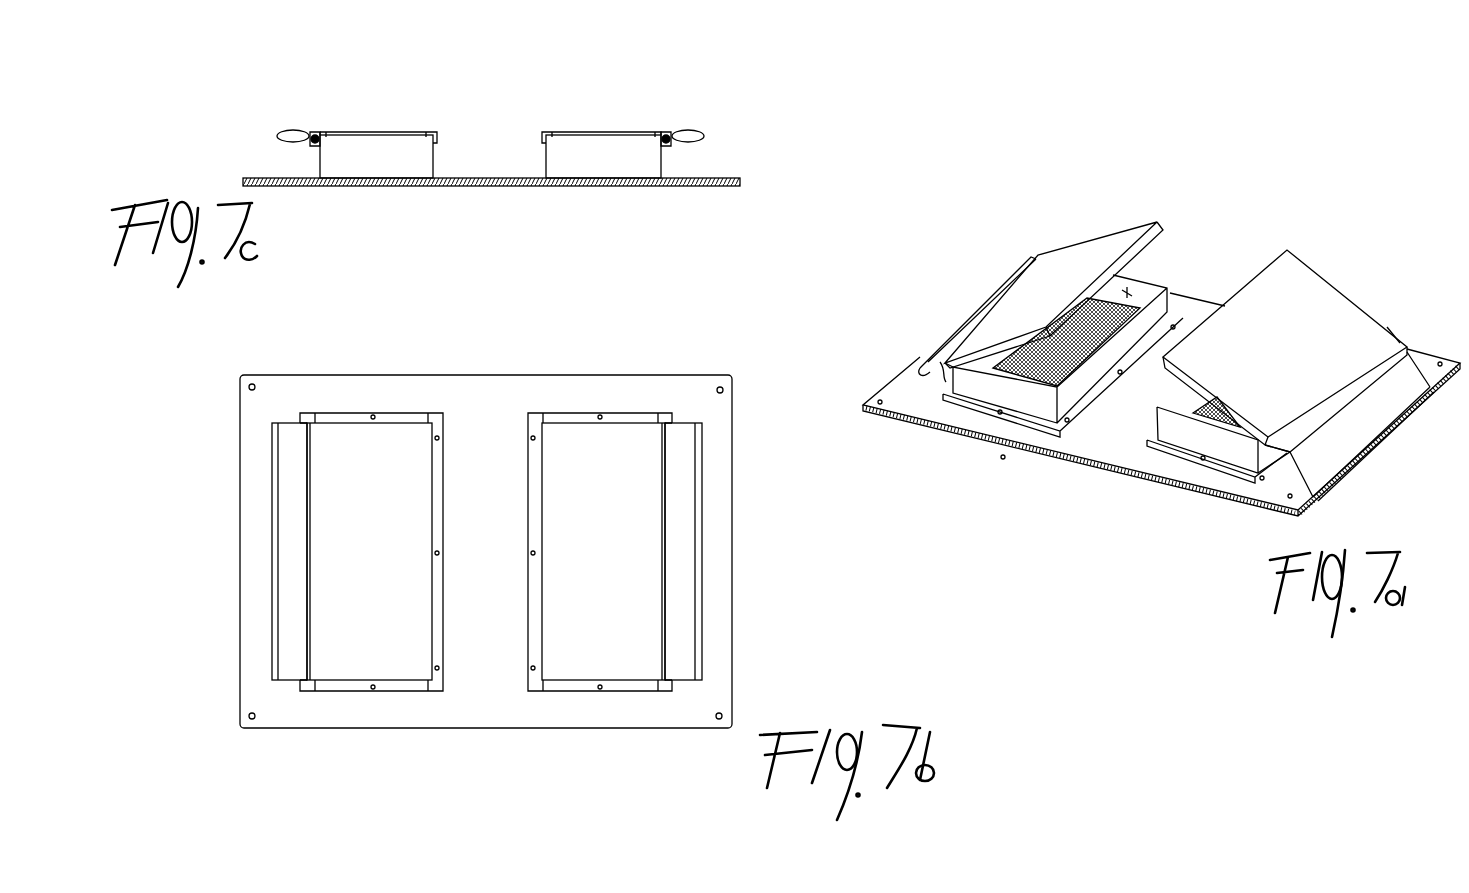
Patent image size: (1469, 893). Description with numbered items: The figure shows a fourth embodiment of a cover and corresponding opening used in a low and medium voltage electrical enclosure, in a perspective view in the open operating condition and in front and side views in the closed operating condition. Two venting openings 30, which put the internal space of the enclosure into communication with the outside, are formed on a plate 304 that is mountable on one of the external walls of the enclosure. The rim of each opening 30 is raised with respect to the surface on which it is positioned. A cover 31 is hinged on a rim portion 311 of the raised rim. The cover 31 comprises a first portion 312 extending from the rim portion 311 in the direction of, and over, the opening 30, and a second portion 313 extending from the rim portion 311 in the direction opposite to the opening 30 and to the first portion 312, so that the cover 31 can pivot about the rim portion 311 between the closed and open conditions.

In FIG. 7C, the venting opening 30 is at (392, 185).
In FIG. 7B, the venting opening 30 is at (486, 552).
In FIG. 7A, the venting opening 30 is at (1128, 293).
In FIG. 7C, the cover 31 is at (464, 125).
In FIG. 7B, the cover 31 is at (488, 563).
In FIG. 7A, the cover 31 is at (1164, 317).
In FIG. 7C, the rim portion 311 is at (316, 132).
In FIG. 7B, the rim portion 311 is at (310, 685).
In FIG. 7A, the rim portion 311 is at (953, 367).
In FIG. 7C, the first portion 312 is at (380, 132).
In FIG. 7B, the first portion 312 is at (388, 560).
In FIG. 7A, the first portion 312 is at (1103, 244).
In FIG. 7C, the second portion 313 is at (273, 130).
In FIG. 7B, the second portion 313 is at (284, 503).
In FIG. 7A, the second portion 313 is at (1012, 277).
In FIG. 7C, the plate 304 is at (722, 184).
In FIG. 7B, the plate 304 is at (665, 717).
In FIG. 7A, the plate 304 is at (1247, 488).